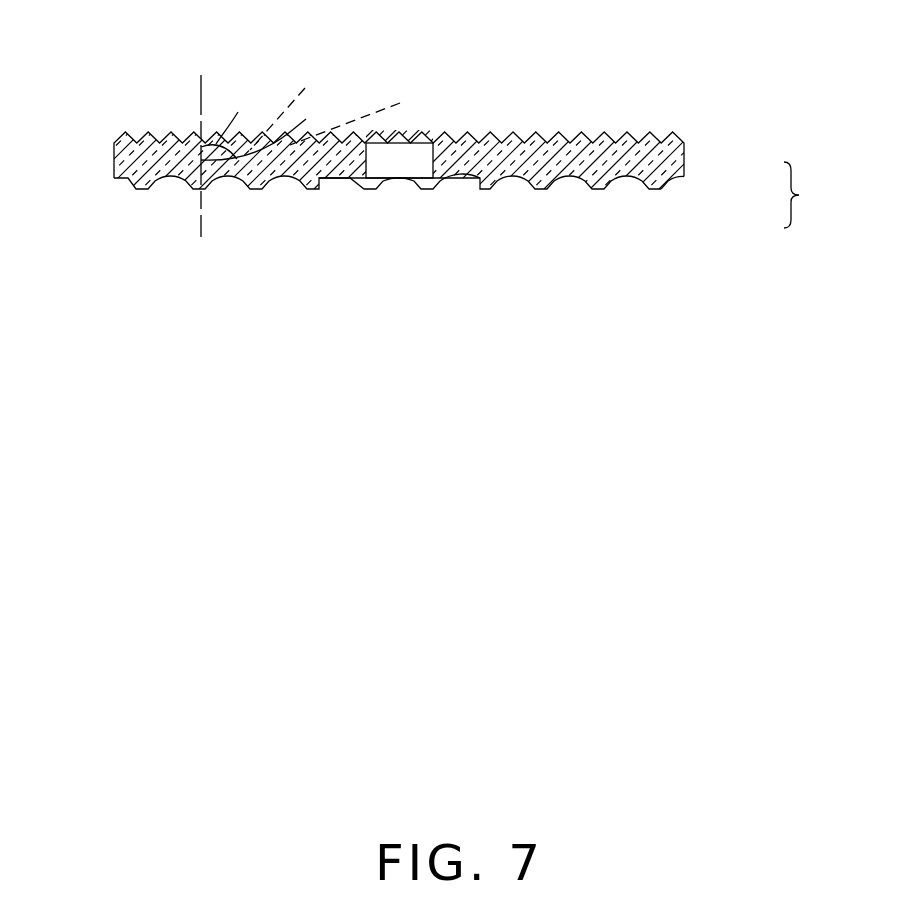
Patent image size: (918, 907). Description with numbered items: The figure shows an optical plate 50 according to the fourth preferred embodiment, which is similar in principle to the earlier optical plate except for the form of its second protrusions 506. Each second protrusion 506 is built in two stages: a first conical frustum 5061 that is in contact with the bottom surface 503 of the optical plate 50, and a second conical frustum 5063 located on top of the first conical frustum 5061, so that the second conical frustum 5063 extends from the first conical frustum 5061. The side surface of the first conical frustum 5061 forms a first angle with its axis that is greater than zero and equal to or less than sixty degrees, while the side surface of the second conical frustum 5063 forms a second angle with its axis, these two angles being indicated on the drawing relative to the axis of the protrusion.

The optical plate 50 is at (155, 80).
The bottom surface 503 is at (515, 178).
The second protrusion 506 is at (820, 195).
The first conical frustum 5061 is at (670, 178).
The second conical frustum 5063 is at (666, 184).